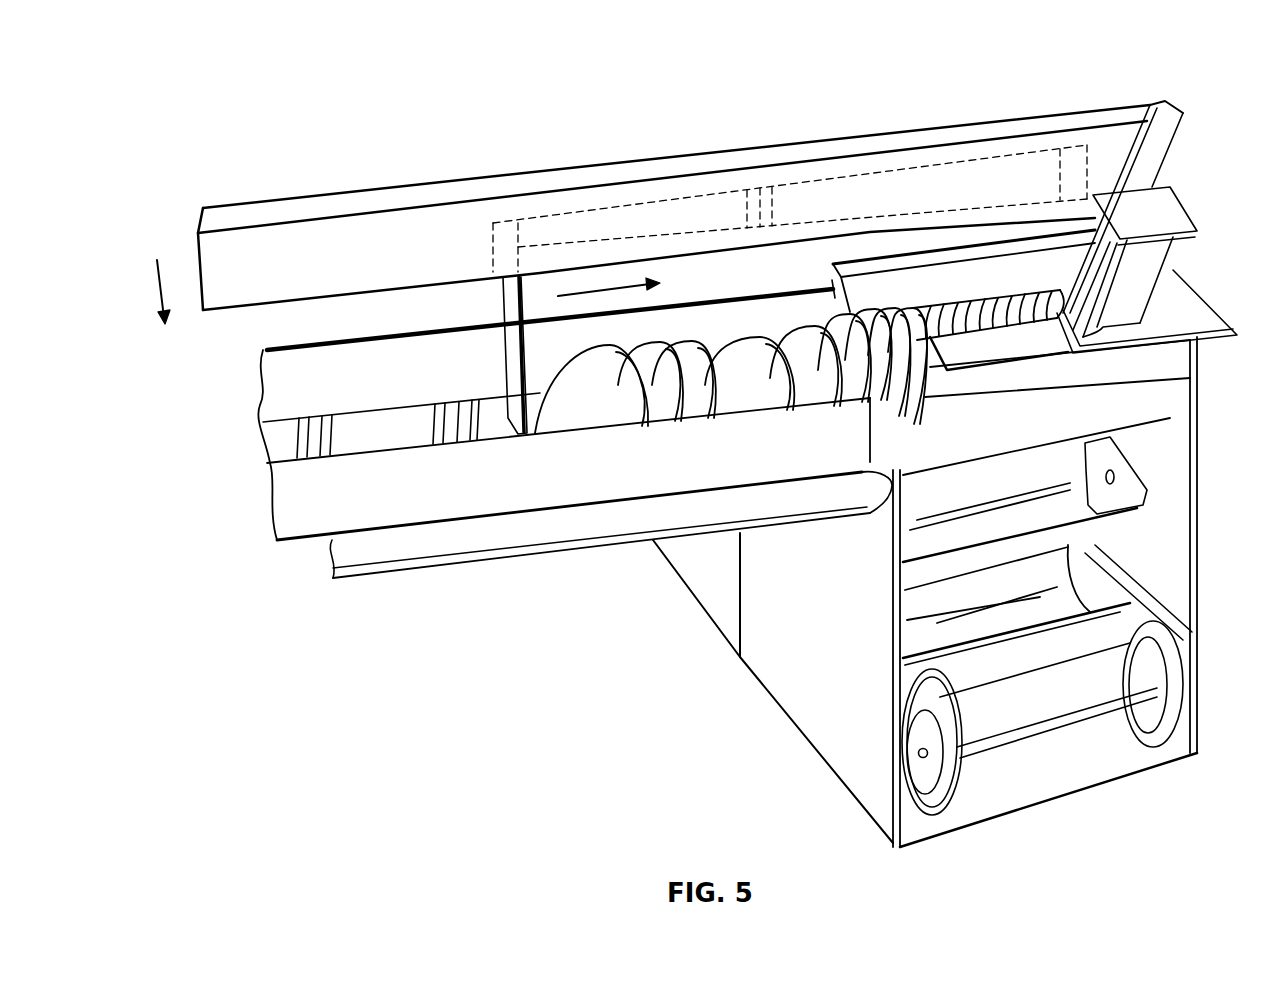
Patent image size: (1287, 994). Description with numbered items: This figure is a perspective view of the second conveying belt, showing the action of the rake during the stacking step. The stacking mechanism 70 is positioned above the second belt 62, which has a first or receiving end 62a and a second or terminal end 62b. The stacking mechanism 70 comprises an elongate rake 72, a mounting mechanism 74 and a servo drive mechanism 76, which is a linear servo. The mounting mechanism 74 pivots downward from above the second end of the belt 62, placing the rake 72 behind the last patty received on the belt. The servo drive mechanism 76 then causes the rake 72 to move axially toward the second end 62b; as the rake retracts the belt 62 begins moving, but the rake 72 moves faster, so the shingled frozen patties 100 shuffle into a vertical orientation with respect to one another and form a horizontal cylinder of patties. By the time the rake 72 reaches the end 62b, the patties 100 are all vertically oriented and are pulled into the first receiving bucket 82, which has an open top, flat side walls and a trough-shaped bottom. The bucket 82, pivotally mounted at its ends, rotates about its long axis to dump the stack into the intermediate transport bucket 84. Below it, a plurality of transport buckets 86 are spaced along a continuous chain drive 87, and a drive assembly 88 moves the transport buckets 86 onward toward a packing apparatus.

The stacking mechanism 70 is at (792, 111).
The mounting mechanism 74 is at (520, 187).
The servo drive mechanism 76 is at (873, 181).
The elongate rake 72 is at (503, 300).
The second belt 62 is at (528, 447).
The first or receiving end 62a is at (258, 452).
The second or terminal end 62b is at (878, 490).
The frozen patties 100 is at (977, 300).
The first receiving bucket 82 is at (1177, 290).
The intermediate transport bucket 84 is at (1123, 490).
The transport buckets 86 is at (893, 650).
The continuous chain drive 87 is at (1133, 703).
The drive assembly 88 is at (1190, 704).